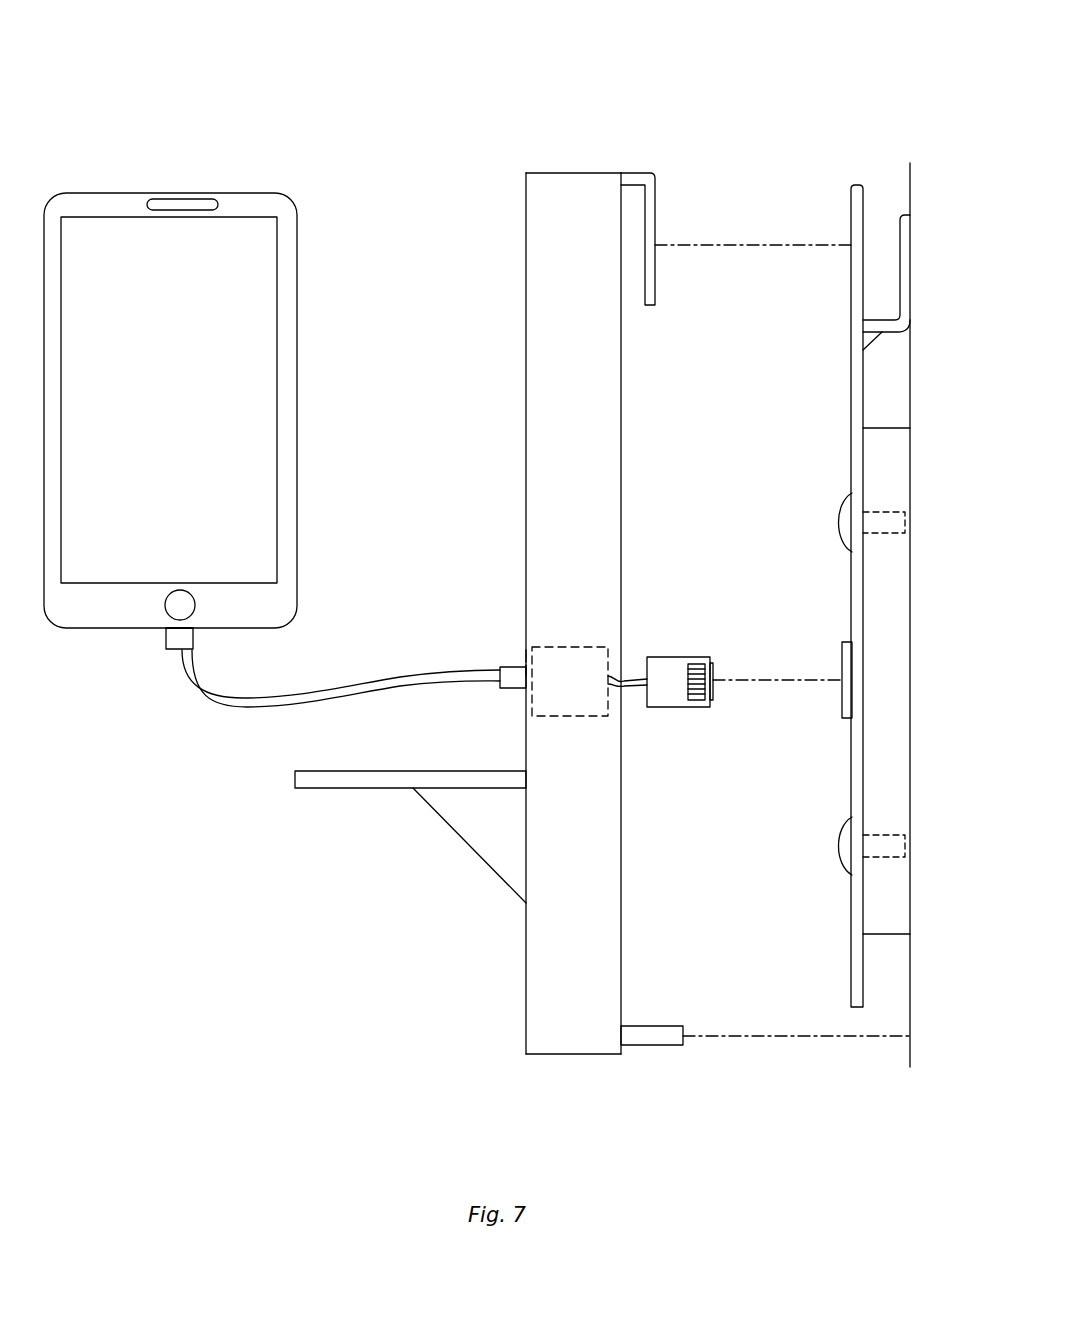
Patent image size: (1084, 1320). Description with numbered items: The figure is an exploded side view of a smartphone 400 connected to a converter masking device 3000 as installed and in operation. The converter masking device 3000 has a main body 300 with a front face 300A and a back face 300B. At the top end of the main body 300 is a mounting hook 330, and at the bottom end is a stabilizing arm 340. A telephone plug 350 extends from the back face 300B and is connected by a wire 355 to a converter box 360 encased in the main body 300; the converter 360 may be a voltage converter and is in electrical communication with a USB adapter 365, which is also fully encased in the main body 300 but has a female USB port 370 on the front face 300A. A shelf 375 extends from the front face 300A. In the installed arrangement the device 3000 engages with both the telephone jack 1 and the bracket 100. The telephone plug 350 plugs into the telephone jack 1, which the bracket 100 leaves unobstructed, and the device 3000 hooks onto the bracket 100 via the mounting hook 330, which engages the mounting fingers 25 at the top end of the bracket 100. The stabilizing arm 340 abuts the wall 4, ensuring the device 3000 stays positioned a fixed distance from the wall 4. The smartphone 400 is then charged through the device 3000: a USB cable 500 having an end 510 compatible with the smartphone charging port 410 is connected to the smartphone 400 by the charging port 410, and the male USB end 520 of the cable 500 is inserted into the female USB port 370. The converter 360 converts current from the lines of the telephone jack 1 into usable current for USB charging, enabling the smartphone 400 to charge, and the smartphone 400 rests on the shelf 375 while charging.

The converter masking device 3000 is at (471, 108).
The smartphone 400 is at (297, 473).
The smartphone charging port 410 is at (167, 630).
The end of USB cable 510 is at (193, 633).
The USB cable 500 is at (397, 685).
The male USB end 520 is at (502, 668).
The main body 300 is at (544, 613).
The front face 300A is at (526, 328).
The back face 300B is at (621, 938).
The mounting hook 330 is at (657, 180).
The stabilizing arm 340 is at (635, 1026).
The shelf 375 is at (335, 788).
The converter box 360 is at (568, 647).
The USB adapter 365 is at (526, 670).
The female USB port 370 is at (527, 657).
The wire 355 is at (633, 677).
The telephone plug 350 is at (673, 707).
The telephone jack 1 is at (842, 663).
The mounting fingers 25 is at (867, 200).
The bracket 100 is at (905, 662).
The wall 4 is at (960, 468).